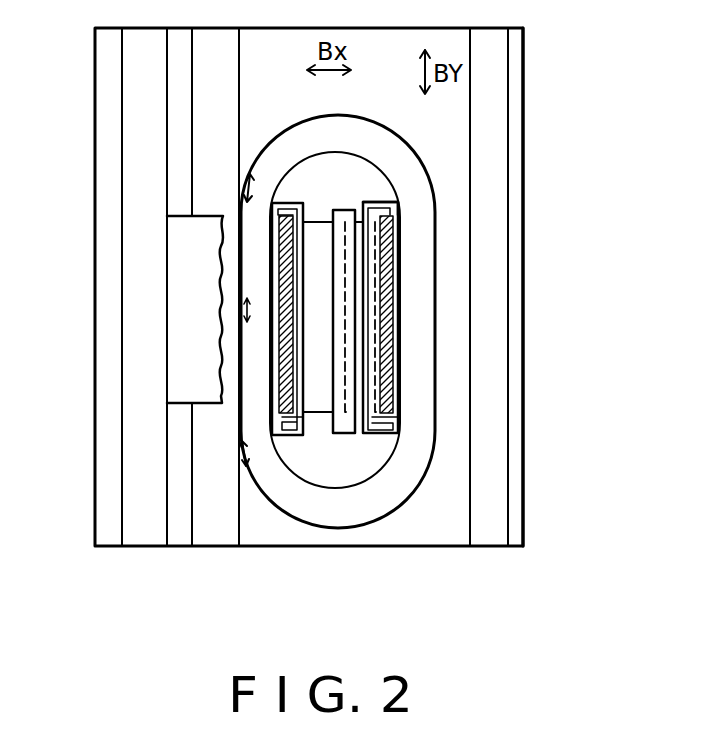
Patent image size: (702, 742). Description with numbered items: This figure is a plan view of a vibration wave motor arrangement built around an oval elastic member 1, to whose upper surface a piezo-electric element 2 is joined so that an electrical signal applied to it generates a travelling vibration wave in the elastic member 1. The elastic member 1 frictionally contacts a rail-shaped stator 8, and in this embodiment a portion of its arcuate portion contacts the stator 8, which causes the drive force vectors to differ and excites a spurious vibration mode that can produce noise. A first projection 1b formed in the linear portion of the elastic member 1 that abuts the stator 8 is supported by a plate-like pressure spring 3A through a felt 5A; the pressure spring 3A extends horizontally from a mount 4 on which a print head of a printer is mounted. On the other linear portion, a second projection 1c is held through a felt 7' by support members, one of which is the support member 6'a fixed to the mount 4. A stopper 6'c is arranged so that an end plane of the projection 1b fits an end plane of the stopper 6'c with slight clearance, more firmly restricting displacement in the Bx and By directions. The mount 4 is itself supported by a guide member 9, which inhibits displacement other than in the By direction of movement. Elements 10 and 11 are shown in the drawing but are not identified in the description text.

The oval elastic member 1 is at (437, 240).
The piezo-electric element 2 is at (423, 290).
The mount 4 is at (185, 263).
The felt 5A is at (285, 347).
The support member 6'a is at (474, 190).
The stopper 6'c is at (303, 510).
The felt 7' is at (475, 313).
The rail-shaped stator 8 is at (215, 535).
The guide member 9 is at (490, 405).
The outer wall 10 is at (518, 478).
The gap 11 is at (243, 188).
The first projection 1b is at (275, 422).
The second projection 1c is at (398, 410).
The plate-like pressure spring 3A is at (318, 418).